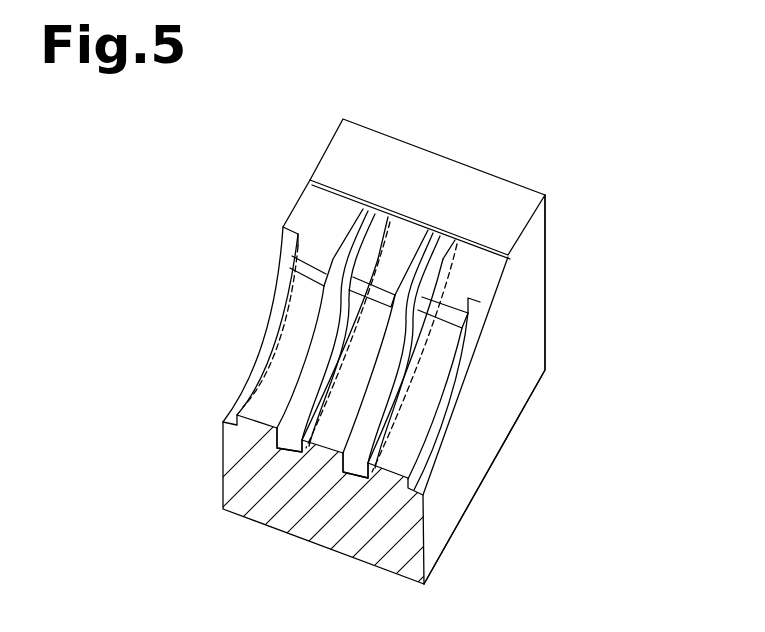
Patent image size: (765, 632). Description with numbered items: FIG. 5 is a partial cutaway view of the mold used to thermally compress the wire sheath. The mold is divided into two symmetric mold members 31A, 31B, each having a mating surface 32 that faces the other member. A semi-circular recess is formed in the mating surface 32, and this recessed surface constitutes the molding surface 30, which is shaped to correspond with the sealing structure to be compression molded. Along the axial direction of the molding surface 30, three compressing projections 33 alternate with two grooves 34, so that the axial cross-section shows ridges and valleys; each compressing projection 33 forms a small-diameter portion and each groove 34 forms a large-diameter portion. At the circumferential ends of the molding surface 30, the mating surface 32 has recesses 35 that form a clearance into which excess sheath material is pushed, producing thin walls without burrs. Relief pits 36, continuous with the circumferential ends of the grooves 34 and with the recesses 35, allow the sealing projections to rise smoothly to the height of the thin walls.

The molding surface 30 is at (278, 332).
The mold member 31A is at (551, 238).
The mold member 31B is at (484, 389).
The mating surface 32 is at (496, 182).
The compressing projection 33 is at (272, 390).
The groove 34 is at (278, 447).
The recess 35 is at (320, 215).
The relief pit 36 is at (366, 218).